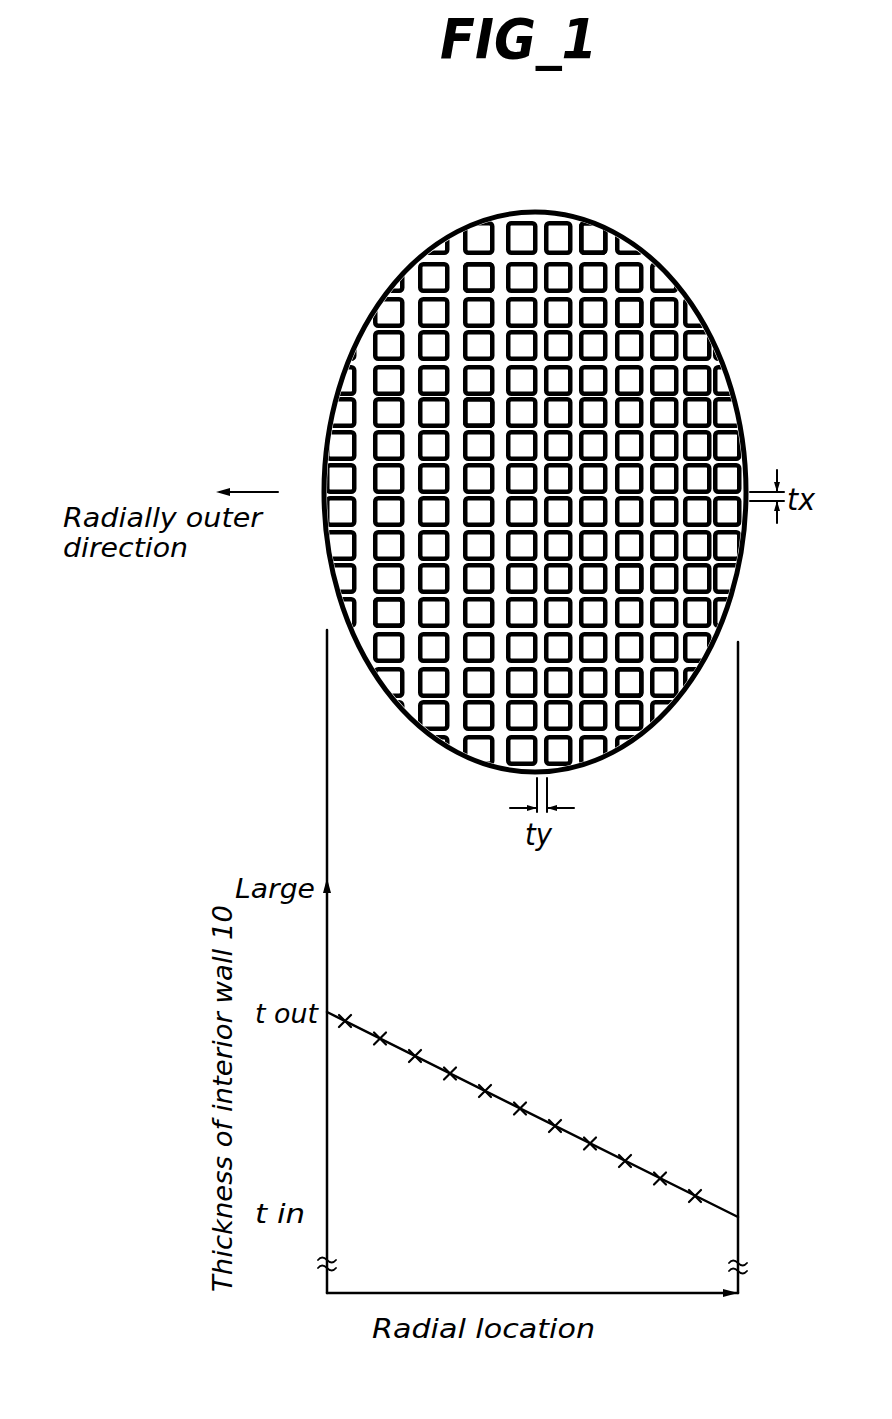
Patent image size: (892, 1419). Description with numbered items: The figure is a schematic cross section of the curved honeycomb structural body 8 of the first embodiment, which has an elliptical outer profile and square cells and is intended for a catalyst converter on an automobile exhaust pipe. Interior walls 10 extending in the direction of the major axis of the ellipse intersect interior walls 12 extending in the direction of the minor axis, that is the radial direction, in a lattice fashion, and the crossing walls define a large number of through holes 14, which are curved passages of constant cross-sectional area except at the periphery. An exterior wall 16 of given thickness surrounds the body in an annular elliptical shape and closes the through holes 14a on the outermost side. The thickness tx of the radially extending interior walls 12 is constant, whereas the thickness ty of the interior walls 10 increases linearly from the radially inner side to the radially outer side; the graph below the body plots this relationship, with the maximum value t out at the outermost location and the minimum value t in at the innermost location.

The curved honeycomb structural body 8 is at (549, 204).
The interior walls extending in the major-axis direction 10 is at (612, 382).
The interior walls extending in the minor-axis direction 12 is at (478, 287).
The through hole 14 is at (628, 313).
The through holes on the outermost side 14a is at (594, 240).
The exterior wall 16 is at (440, 240).